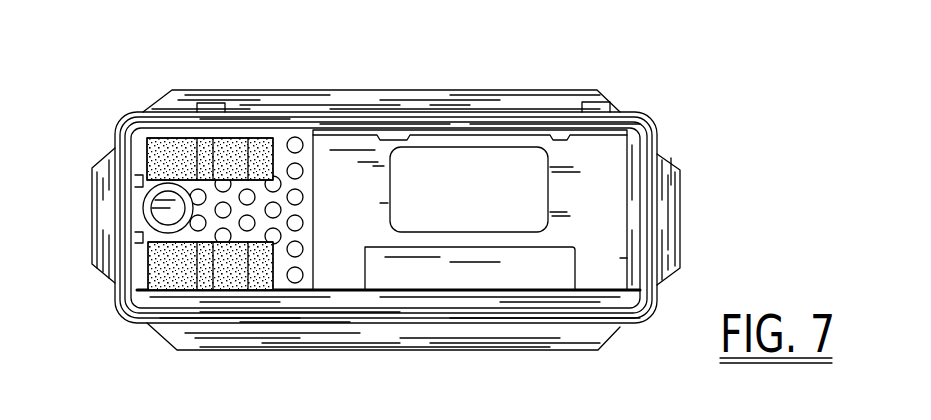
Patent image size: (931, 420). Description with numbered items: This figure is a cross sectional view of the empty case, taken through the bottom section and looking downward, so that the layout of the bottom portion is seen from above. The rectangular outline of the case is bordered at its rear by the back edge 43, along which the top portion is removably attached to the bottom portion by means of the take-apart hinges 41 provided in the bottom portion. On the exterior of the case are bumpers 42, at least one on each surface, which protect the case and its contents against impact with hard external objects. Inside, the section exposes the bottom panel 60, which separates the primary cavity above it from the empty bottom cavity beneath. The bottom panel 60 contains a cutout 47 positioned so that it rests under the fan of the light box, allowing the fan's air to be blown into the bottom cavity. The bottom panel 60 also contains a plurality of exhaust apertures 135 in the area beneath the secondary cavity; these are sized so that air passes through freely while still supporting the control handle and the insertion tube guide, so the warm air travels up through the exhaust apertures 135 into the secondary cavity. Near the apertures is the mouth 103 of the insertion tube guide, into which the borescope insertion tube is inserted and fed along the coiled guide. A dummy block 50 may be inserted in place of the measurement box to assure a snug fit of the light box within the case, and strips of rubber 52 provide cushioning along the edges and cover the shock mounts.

The take-apart hinges 41 is at (217, 103).
The bumpers 42 is at (681, 248).
The back edge 43 is at (126, 121).
The cutout 47 is at (460, 158).
The dummy block 50 is at (492, 277).
The strips of rubber 52 is at (172, 299).
The bottom panel 60 is at (598, 170).
The mouth 103 is at (148, 213).
The exhaust apertures 135 is at (297, 138).